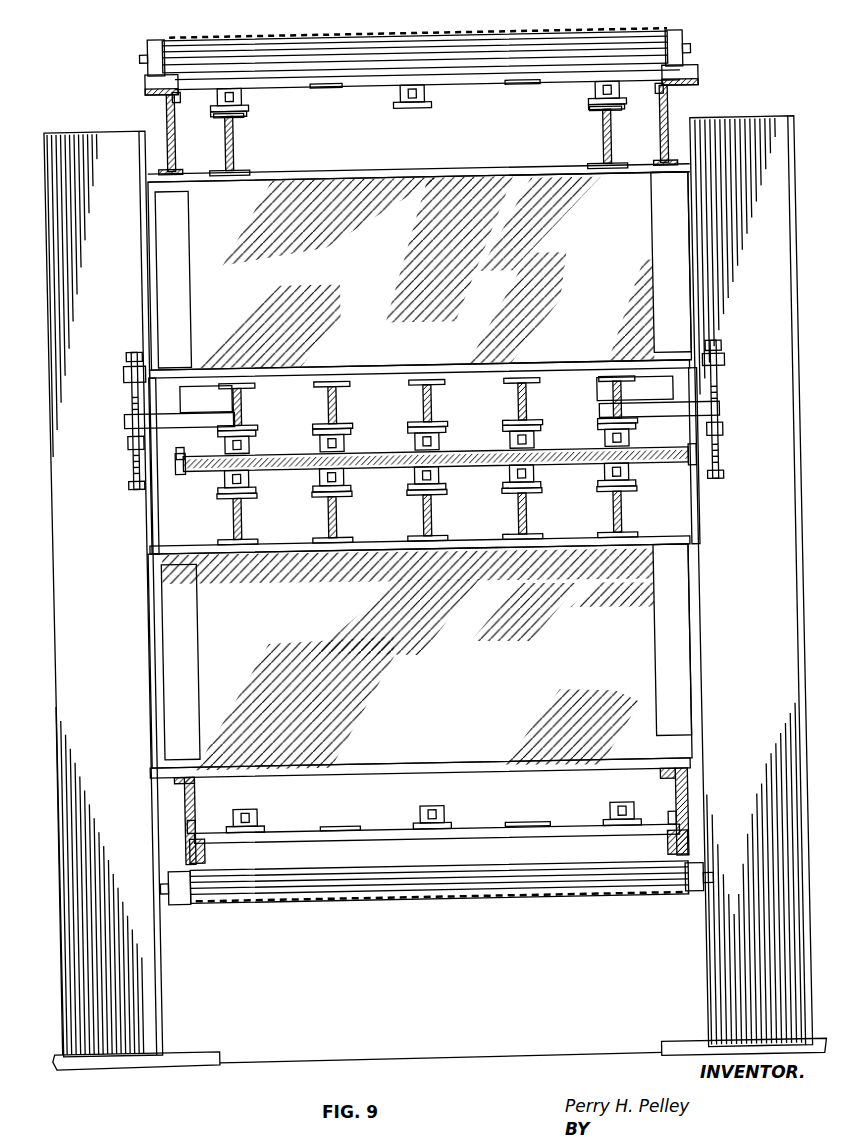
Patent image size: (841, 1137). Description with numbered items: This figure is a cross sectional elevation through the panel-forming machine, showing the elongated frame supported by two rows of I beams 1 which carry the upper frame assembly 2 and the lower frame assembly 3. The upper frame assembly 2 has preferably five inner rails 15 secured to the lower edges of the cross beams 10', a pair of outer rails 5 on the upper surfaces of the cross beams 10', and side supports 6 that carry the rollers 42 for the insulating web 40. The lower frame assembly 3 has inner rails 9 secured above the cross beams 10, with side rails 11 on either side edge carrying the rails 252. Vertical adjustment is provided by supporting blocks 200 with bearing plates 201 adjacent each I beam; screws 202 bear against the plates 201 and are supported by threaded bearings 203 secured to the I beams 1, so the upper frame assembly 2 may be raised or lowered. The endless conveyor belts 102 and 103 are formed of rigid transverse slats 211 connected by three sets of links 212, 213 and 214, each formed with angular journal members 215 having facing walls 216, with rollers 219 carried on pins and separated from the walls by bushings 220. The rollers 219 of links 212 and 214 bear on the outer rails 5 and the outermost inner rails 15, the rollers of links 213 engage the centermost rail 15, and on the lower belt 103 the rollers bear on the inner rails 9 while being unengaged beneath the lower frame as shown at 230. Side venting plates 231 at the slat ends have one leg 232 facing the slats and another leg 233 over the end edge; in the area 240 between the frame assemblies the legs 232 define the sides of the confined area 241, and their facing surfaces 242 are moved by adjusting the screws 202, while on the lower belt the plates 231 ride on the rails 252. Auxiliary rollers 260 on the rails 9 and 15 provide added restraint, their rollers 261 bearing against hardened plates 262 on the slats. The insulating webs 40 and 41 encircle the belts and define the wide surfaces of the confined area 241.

The I beams 1 is at (108, 581).
The upper frame assembly 2 is at (137, 110).
The lower frame assembly 3 is at (267, 936).
The outer rails 5 is at (245, 142).
The side supports 6 is at (184, 124).
The inner rails 9 is at (234, 520).
The cross beams 10 is at (419, 661).
The cross beams 10' is at (420, 271).
The side rails 11 is at (191, 805).
The inner rails 15 is at (245, 403).
The insulating web 40 is at (494, 34).
The insulating web 41 is at (642, 470).
The rollers 42 is at (150, 53).
The endless conveyor belt 102 is at (533, 109).
The endless conveyor belt 103 is at (488, 468).
The supporting blocks 200 is at (180, 399).
The bearing plates 201 is at (128, 414).
The screws 202 is at (132, 386).
The threaded bearings 203 is at (133, 350).
The transverse slats 211 is at (401, 448).
The links 212 is at (254, 100).
The links 213 is at (461, 114).
The links 214 is at (607, 100).
The angular journal members 215 is at (330, 45).
The facing walls 216 is at (608, 85).
The rollers 219 is at (236, 114).
The bushings 220 is at (420, 85).
The unengaged rollers location 230 is at (247, 796).
The side venting plates 231 is at (683, 455).
The leg 232 is at (158, 78).
The leg 233 is at (190, 838).
The belt area between frame assemblies 240 is at (176, 494).
The confined area 241 is at (299, 452).
The facing surfaces 242 is at (179, 459).
The rails 252 is at (665, 870).
The auxiliary rollers 260 is at (345, 440).
The rollers 261 is at (324, 485).
The plates 262 is at (530, 88).